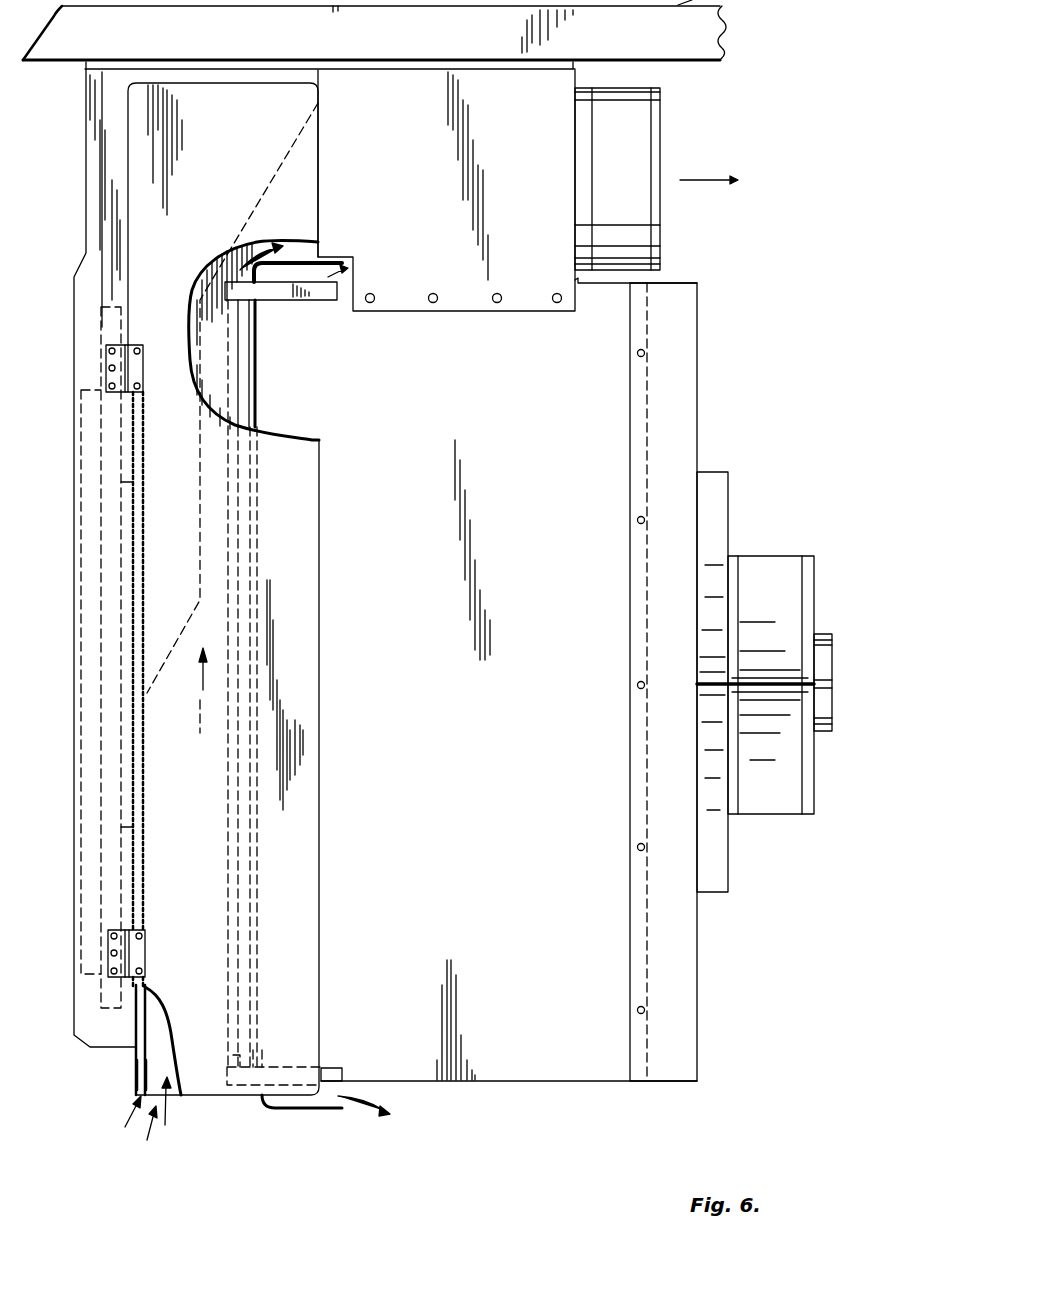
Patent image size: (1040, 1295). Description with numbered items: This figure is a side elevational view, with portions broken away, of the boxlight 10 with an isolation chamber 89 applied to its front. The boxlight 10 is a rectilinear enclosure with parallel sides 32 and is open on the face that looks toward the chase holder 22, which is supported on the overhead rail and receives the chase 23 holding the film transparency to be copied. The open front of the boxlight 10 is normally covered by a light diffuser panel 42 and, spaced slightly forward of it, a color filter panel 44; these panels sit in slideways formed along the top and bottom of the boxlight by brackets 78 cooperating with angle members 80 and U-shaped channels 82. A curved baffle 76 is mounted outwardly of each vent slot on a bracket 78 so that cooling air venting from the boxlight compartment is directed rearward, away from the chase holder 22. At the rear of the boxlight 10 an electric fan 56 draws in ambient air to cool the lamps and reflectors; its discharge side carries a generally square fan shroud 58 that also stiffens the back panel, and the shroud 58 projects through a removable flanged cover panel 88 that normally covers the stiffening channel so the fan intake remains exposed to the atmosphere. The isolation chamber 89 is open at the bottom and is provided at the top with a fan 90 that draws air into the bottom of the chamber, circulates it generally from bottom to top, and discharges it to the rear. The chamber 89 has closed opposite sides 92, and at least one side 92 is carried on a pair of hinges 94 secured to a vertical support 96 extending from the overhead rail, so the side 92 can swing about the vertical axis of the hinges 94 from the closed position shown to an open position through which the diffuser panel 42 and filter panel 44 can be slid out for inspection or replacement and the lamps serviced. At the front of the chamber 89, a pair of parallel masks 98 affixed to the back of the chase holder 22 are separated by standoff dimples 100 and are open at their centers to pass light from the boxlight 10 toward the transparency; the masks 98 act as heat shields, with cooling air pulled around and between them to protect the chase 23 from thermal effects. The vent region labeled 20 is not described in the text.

The boxlight 10 is at (486, 1118).
The fan housing 20 is at (527, 296).
The chase holder 22 is at (108, 762).
The chase 23 is at (90, 730).
The sides 32 is at (598, 1050).
The light diffuser panel 42 is at (250, 407).
The color filter panel 44 is at (232, 372).
The electric fan 56 is at (800, 588).
The fan shroud 58 is at (715, 503).
The curved baffle 76 is at (292, 262).
The bracket 78 is at (298, 312).
The angle member 80 is at (257, 305).
The U-shaped channel 82 is at (243, 320).
The flanged cover panel 88 is at (697, 432).
The isolation chamber 89 is at (150, 1115).
The fan 90 is at (642, 134).
The sides 92 is at (216, 828).
The hinges 94 is at (120, 360).
The vertical support 96 is at (92, 580).
The masks 98 is at (146, 1073).
The standoff dimples 100 is at (140, 405).